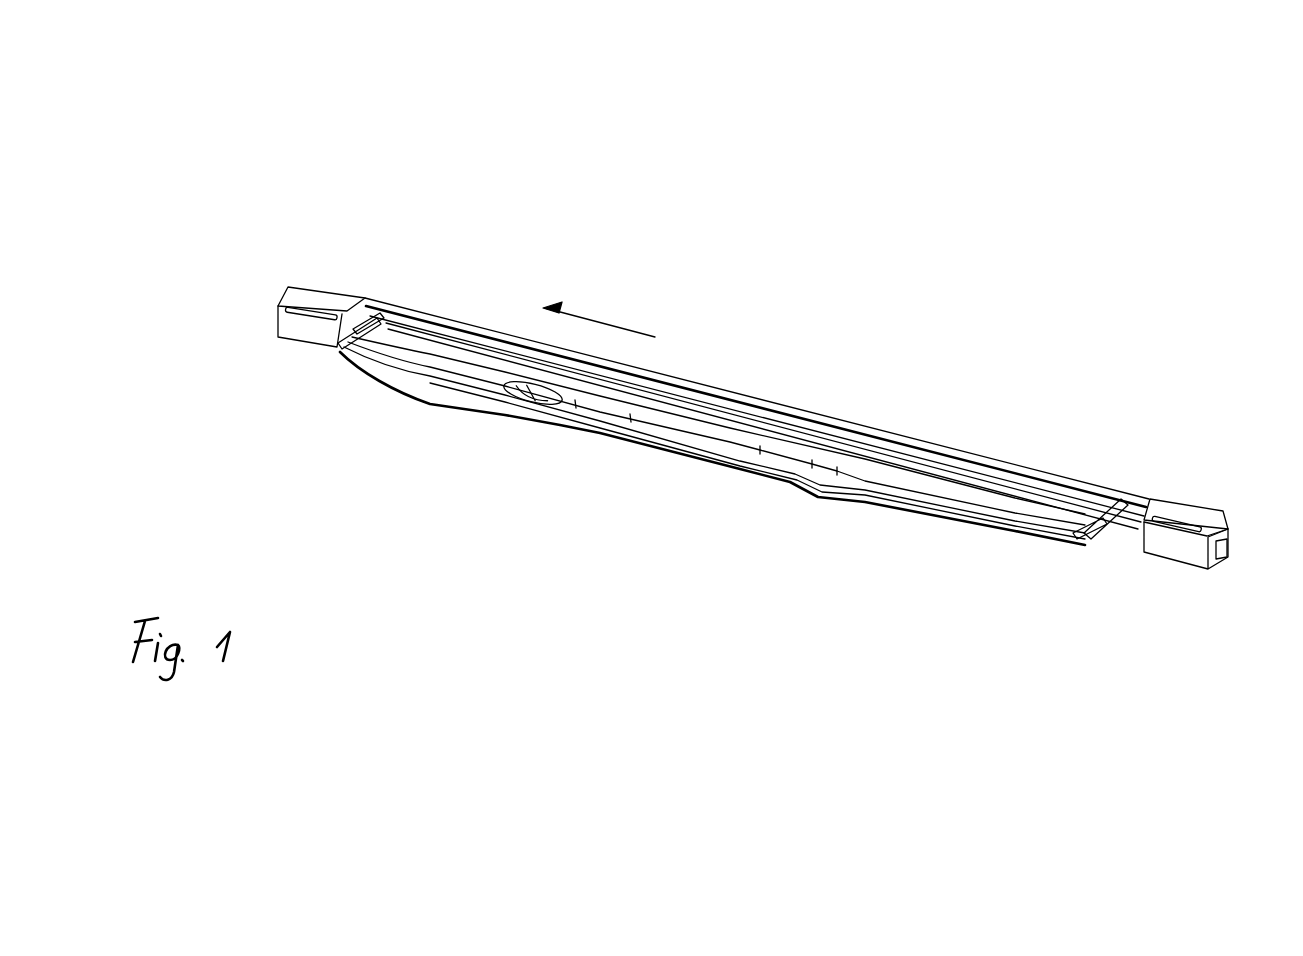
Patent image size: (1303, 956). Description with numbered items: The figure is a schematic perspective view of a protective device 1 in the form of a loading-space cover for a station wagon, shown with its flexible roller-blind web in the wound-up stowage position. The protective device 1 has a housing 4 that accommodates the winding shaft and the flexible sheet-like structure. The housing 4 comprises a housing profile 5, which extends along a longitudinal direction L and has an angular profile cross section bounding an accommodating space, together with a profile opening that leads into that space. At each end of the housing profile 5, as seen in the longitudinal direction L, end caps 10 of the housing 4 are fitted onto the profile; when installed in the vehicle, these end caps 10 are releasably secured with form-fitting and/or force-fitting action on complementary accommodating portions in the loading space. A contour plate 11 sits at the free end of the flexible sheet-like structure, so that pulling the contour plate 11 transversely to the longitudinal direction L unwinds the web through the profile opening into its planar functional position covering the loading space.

The protective device 1 is at (773, 314).
The housing 4 is at (655, 310).
The housing profile 5 is at (875, 430).
The end caps 10 is at (320, 298).
The contour plate 11 is at (608, 407).
The longitudinal direction L is at (599, 284).